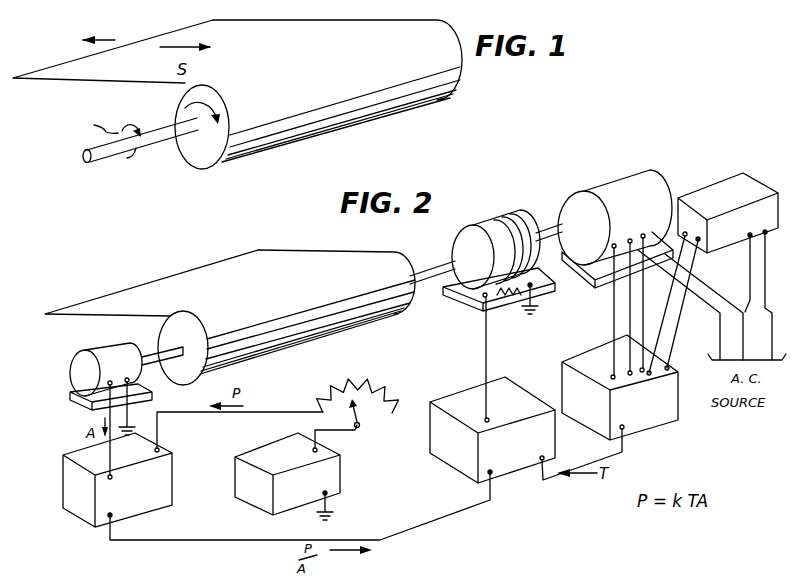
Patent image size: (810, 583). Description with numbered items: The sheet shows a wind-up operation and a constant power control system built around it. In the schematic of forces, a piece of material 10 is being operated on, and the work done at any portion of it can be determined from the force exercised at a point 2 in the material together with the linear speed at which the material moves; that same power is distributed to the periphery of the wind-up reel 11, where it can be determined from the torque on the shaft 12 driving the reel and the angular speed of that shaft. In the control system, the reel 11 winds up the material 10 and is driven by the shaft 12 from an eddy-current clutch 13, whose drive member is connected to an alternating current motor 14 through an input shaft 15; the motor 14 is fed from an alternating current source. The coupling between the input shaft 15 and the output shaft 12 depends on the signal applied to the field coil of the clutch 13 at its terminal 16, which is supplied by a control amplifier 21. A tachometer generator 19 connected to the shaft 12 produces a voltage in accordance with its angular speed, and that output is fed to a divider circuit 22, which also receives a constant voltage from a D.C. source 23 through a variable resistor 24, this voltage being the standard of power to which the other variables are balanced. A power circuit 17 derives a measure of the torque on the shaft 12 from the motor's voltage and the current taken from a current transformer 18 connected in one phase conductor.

In FIG. 1, the point 2 is at (140, 42).
In FIG. 1, the material 10 is at (87, 70).
In FIG. 1, the wind-up reel 11 is at (377, 111).
In FIG. 2, the wind-up reel 11 is at (330, 258).
In FIG. 1, the shaft 12 is at (173, 146).
In FIG. 2, the shaft 12 is at (435, 261).
In FIG. 2, the eddy-current clutch 13 is at (510, 214).
In FIG. 2, the motor 14 is at (641, 181).
In FIG. 2, the shaft 15 is at (546, 223).
In FIG. 2, the terminal 16 is at (486, 335).
In FIG. 2, the power circuit 17 is at (583, 358).
In FIG. 2, the current transformer 18 is at (718, 192).
In FIG. 2, the tachometer generator 19 is at (80, 360).
In FIG. 2, the control amplifier 21 is at (452, 400).
In FIG. 2, the divider circuit 22 is at (73, 485).
In FIG. 2, the D.C. source 23 is at (243, 460).
In FIG. 2, the variable resistor 24 is at (342, 386).